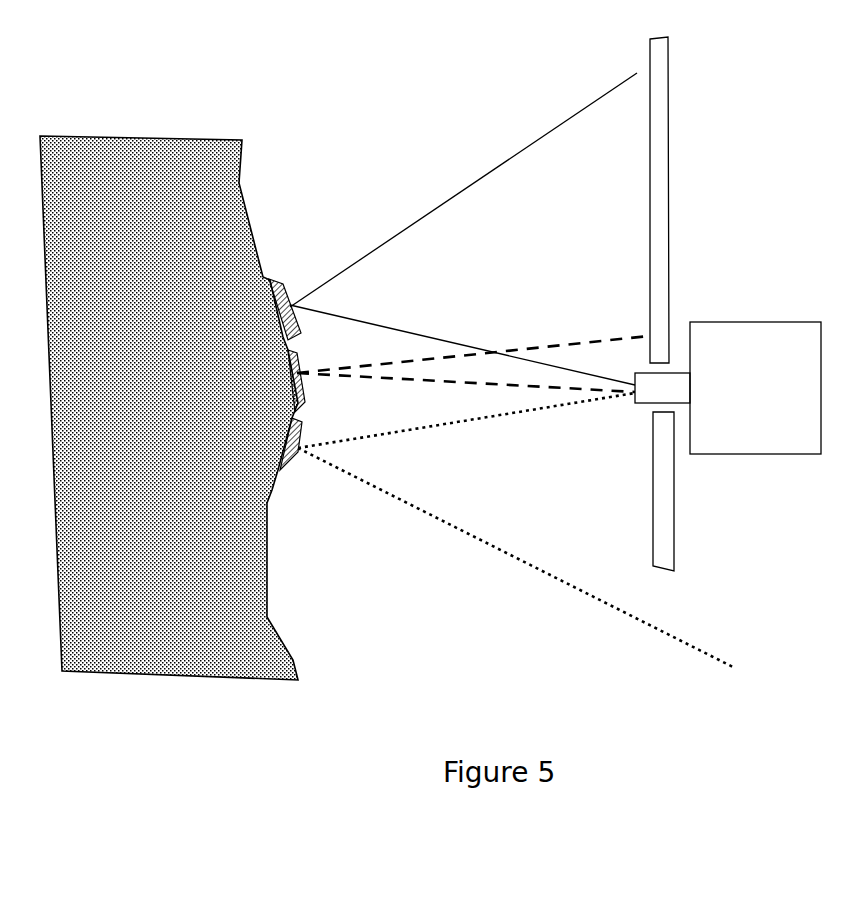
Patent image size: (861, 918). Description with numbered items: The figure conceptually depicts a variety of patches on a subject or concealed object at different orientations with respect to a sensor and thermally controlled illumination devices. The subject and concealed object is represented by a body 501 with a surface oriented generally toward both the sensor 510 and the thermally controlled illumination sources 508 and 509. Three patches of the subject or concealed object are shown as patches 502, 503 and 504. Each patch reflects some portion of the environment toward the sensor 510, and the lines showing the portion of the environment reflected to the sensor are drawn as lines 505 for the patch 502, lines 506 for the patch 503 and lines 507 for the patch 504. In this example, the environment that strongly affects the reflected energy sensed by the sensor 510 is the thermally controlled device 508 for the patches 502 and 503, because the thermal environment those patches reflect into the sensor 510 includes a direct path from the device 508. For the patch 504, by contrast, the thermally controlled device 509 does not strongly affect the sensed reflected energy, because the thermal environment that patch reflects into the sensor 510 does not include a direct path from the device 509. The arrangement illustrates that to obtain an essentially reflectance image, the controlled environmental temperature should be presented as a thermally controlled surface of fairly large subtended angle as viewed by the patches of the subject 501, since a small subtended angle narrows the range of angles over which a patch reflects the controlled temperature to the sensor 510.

The subject and concealed object 501 is at (228, 138).
The patch 502 is at (288, 280).
The patch 503 is at (300, 362).
The patch 504 is at (293, 470).
The lines showing portion of environment reflected to the sensor 505 is at (470, 183).
The lines showing portion of environment reflected to the sensor 506 is at (602, 338).
The lines showing portion of environment reflected to the sensor 507 is at (477, 418).
The thermally controlled illumination source 508 is at (669, 225).
The thermally controlled illumination source 509 is at (676, 547).
The sensor 510 is at (783, 318).